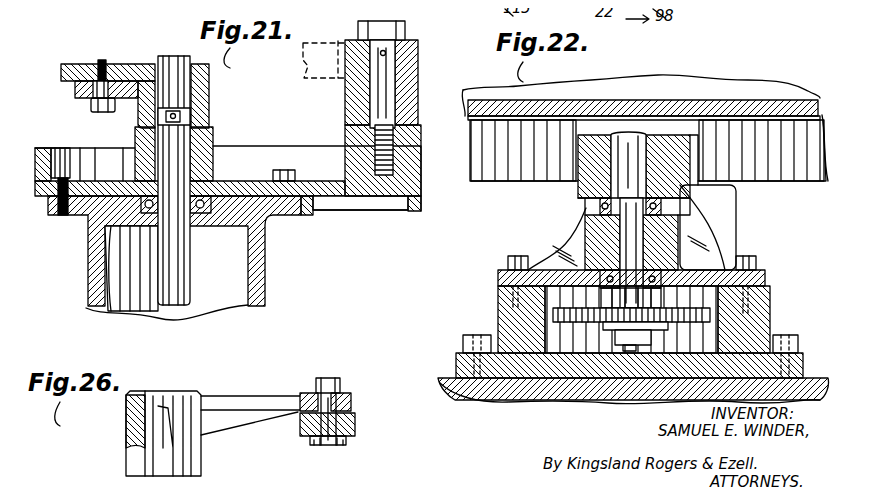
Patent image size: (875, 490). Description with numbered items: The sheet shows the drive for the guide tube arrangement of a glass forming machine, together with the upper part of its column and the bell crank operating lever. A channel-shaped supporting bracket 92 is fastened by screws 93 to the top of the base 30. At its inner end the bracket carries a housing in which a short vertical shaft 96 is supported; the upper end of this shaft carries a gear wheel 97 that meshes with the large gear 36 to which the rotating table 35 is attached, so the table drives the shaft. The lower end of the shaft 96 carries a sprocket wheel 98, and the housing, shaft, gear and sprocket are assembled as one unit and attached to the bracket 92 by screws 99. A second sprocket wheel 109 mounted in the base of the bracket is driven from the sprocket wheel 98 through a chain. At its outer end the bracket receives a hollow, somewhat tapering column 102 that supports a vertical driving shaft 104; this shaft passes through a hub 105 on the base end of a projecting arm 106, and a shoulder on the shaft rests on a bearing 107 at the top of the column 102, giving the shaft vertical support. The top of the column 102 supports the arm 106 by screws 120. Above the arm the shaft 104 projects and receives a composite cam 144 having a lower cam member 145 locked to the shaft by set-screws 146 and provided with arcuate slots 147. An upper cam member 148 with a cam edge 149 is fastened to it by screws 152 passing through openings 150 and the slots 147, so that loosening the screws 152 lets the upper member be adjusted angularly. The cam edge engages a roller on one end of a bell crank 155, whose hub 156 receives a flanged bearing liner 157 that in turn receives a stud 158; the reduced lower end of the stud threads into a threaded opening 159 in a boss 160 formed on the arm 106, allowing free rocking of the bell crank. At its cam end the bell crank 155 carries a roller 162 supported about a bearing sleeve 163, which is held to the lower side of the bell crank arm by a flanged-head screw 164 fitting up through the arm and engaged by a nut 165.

In FIG. 22, the base 30 is at (527, 385).
In FIG. 22, the rotating table 35 is at (752, 92).
In FIG. 22, the large gear 36 is at (790, 173).
In FIG. 21, the supporting bracket 92 is at (144, 12).
In FIG. 22, the supporting bracket 92 is at (462, 345).
In FIG. 22, the screws 93 is at (466, 327).
In FIG. 22, the short vertical shaft 96 is at (620, 231).
In FIG. 22, the gear wheel 97 is at (570, 177).
In FIG. 22, the sprocket wheel 98 is at (677, 297).
In FIG. 22, the screws 99 is at (503, 251).
In FIG. 21, the column 102 is at (258, 290).
In FIG. 21, the vertical driving shaft 104 is at (165, 300).
In FIG. 21, the hub 105 is at (203, 158).
In FIG. 21, the projecting arm 106 is at (325, 190).
In FIG. 21, the bearing 107 is at (246, 207).
In FIG. 21, the sprocket wheel 109 is at (63, 12).
In FIG. 21, the screws 120 is at (67, 165).
In FIG. 21, the composite cam 144 is at (224, 70).
In FIG. 21, the lower cam member 145 is at (203, 81).
In FIG. 21, the set-screws 146 is at (201, 105).
In FIG. 21, the arcuate slots 147 is at (72, 82).
In FIG. 21, the upper cam member 148 is at (72, 56).
In FIG. 21, the cam edge 149 is at (56, 62).
In FIG. 21, the openings 150 is at (113, 56).
In FIG. 21, the screws 152 is at (92, 104).
In FIG. 21, the bell crank 155 is at (309, 33).
In FIG. 26, the bell crank 155 is at (243, 390).
In FIG. 21, the hub 156 is at (337, 90).
In FIG. 26, the hub 156 is at (150, 450).
In FIG. 21, the flanged bearing liner 157 is at (420, 92).
In FIG. 21, the stud 158 is at (398, 17).
In FIG. 21, the threaded opening 159 is at (405, 172).
In FIG. 21, the boss 160 is at (400, 150).
In FIG. 26, the roller 162 is at (345, 431).
In FIG. 26, the bearing sleeve 163 is at (350, 414).
In FIG. 26, the screw 164 is at (320, 437).
In FIG. 26, the nut 165 is at (335, 378).